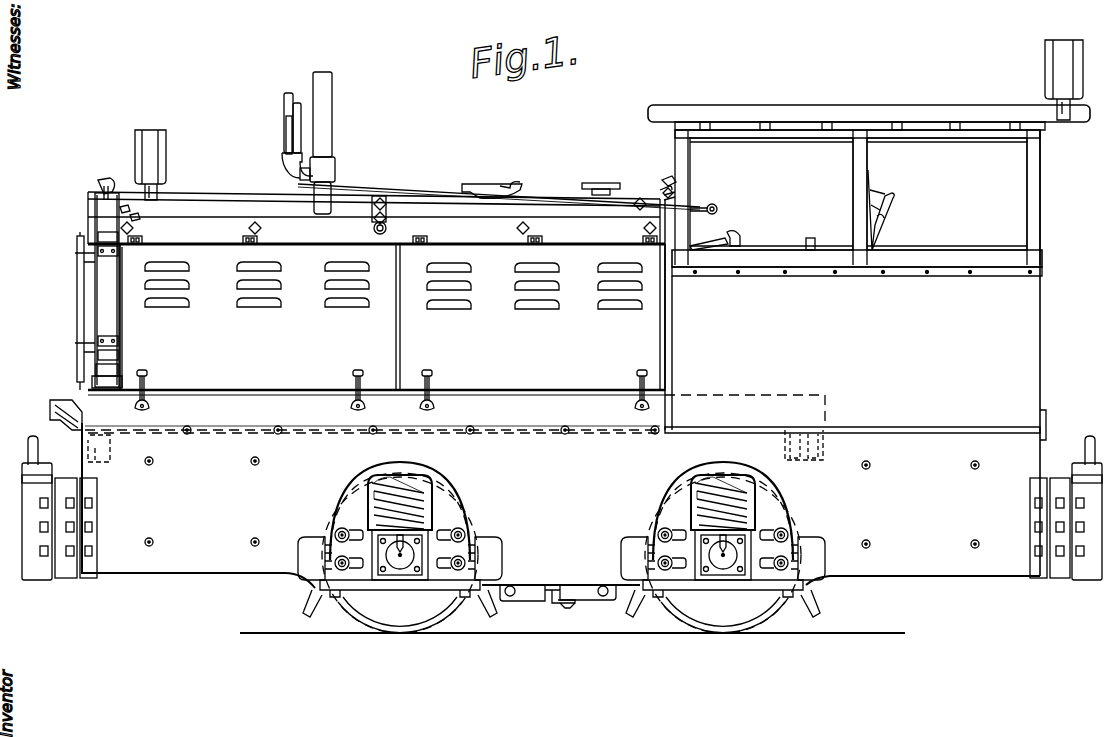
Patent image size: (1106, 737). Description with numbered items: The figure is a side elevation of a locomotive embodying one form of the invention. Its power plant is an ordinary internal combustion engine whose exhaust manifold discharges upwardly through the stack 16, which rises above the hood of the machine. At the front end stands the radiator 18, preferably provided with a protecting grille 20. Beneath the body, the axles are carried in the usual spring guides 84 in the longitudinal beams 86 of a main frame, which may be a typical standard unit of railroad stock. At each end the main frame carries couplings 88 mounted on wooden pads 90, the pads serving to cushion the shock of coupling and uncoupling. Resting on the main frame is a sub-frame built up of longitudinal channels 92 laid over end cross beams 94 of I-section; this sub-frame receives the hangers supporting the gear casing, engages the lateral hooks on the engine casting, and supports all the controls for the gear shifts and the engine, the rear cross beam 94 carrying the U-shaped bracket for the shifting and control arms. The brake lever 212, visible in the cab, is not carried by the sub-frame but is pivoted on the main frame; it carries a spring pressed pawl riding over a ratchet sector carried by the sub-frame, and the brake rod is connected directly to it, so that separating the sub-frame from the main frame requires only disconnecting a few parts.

The stack 16 is at (327, 130).
The radiator 18 is at (108, 291).
The protecting grille 20 is at (84, 323).
The brake lever 212 is at (872, 203).
The spring guides 84 is at (356, 518).
The longitudinal beams 86 is at (223, 540).
The couplings 88 is at (36, 556).
The wooden pads 90 is at (66, 560).
The longitudinal channels 92 is at (242, 432).
The end cross beams 94 is at (100, 452).